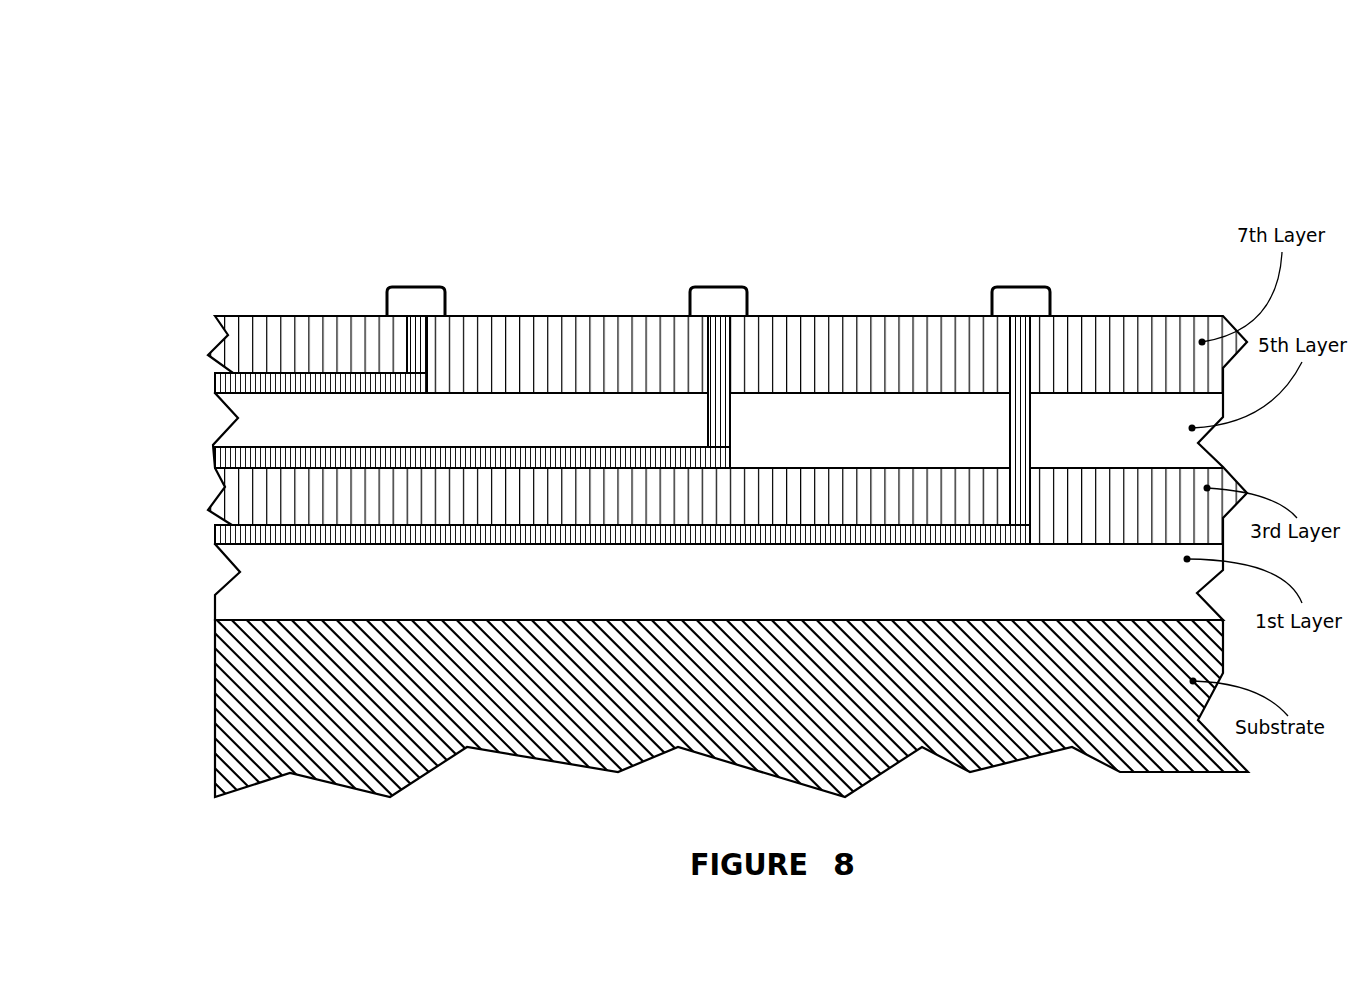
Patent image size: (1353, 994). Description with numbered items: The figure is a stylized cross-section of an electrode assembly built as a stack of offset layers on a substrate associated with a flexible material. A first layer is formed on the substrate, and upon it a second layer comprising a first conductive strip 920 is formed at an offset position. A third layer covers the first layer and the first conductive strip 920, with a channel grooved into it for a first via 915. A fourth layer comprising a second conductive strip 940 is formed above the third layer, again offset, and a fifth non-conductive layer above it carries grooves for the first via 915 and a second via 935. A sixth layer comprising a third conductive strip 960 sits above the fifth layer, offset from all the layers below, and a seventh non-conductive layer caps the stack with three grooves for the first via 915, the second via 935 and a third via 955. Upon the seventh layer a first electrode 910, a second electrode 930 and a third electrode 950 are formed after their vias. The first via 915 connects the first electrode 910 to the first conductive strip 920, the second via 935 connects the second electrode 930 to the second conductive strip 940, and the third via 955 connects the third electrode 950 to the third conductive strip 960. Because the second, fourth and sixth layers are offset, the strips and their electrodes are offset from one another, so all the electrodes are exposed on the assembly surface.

The first electrode 910 is at (1020, 285).
The first via 915 is at (1010, 428).
The first conductive strip 920 is at (222, 538).
The second electrode 930 is at (718, 285).
The second via 935 is at (708, 378).
The second conductive strip 940 is at (225, 459).
The third electrode 950 is at (417, 285).
The third via 955 is at (404, 358).
The third conductive strip 960 is at (220, 383).